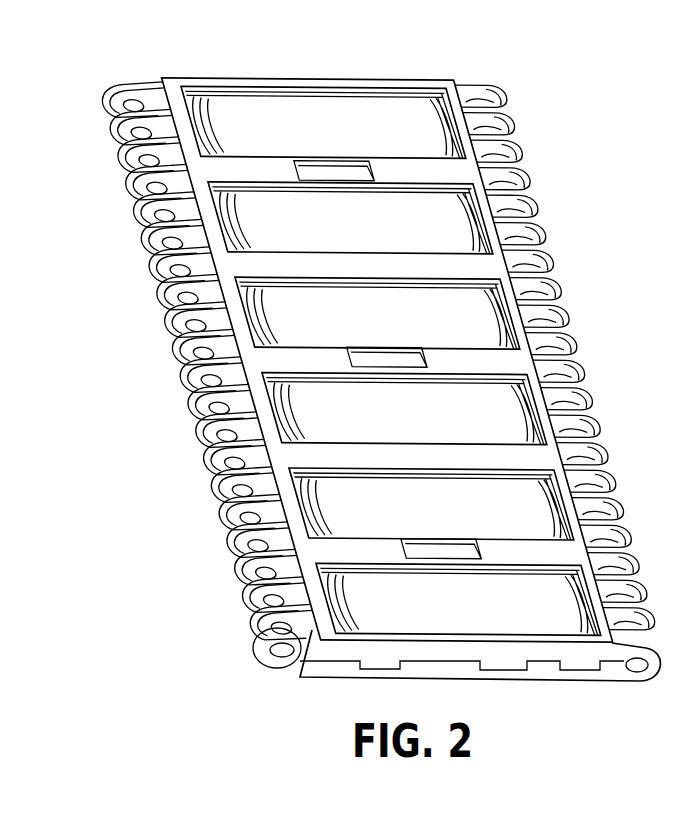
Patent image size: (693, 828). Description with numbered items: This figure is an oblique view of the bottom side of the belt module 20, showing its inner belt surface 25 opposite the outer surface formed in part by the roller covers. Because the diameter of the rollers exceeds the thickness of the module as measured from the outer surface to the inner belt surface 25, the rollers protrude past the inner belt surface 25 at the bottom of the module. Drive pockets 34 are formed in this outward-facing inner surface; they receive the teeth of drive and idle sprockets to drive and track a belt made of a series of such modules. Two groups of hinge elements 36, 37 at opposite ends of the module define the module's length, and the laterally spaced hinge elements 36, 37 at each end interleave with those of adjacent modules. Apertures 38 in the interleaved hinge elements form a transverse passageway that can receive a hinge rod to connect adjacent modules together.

The belt module 20 is at (411, 46).
The inner belt surface 25 is at (572, 552).
The drive pocket 34 is at (312, 174).
The hinge element 36 is at (550, 274).
The hinge element 37 is at (178, 354).
The aperture 38 is at (282, 648).